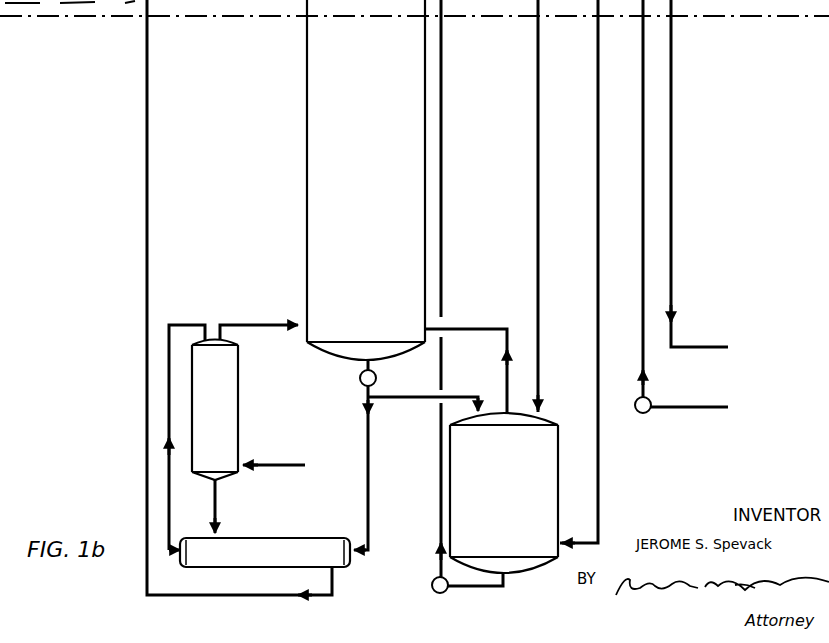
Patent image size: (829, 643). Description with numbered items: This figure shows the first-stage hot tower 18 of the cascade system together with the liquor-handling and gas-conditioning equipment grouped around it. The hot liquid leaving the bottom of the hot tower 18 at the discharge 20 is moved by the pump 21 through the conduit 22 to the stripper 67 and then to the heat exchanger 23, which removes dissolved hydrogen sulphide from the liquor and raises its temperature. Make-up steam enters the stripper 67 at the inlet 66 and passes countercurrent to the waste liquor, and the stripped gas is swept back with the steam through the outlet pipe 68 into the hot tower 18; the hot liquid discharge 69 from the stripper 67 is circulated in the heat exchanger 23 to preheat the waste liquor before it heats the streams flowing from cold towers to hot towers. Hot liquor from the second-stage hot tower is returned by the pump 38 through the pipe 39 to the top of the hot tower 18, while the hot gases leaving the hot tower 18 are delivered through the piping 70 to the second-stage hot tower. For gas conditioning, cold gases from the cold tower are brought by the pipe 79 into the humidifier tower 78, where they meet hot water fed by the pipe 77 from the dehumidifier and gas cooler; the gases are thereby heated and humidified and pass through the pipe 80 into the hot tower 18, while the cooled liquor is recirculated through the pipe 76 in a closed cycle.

The hot tower 18 is at (312, 177).
The hot liquid discharge 20 is at (363, 371).
The pump 21 is at (361, 388).
The conduit 22 is at (374, 441).
The heat exchanger 23 is at (262, 540).
The pump 38 is at (640, 414).
The pipe 39 is at (643, 233).
The steam inlet 66 is at (305, 465).
The contact stripping tower 67 is at (229, 363).
The outlet pipe 68 is at (256, 324).
The hot liquid discharge 69 is at (221, 509).
The piping 70 is at (672, 29).
The pipe 76 is at (443, 51).
The pipe 77 is at (540, 36).
The humidifier tower 78 is at (548, 444).
The pipe 79 is at (600, 146).
The pipe 80 is at (441, 328).